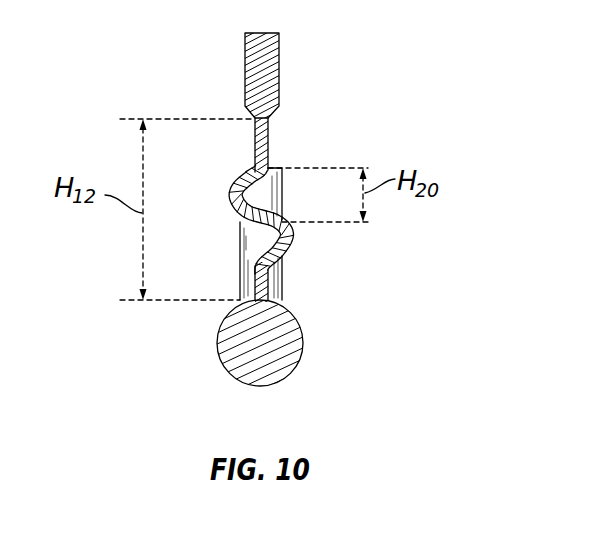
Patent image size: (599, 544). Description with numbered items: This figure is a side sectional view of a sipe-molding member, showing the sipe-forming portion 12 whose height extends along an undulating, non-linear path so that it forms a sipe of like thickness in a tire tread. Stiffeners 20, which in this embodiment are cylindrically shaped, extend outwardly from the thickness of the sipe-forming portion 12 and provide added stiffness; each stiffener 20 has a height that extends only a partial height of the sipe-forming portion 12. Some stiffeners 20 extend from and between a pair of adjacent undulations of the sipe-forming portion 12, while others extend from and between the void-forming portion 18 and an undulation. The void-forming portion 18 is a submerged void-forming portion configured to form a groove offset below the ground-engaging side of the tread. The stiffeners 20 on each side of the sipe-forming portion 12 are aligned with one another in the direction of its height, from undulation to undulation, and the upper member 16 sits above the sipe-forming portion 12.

The sipe-forming portion 12 is at (268, 142).
The head 16 is at (280, 73).
The void-forming portion 18 is at (300, 343).
The stiffeners 20 is at (281, 203).